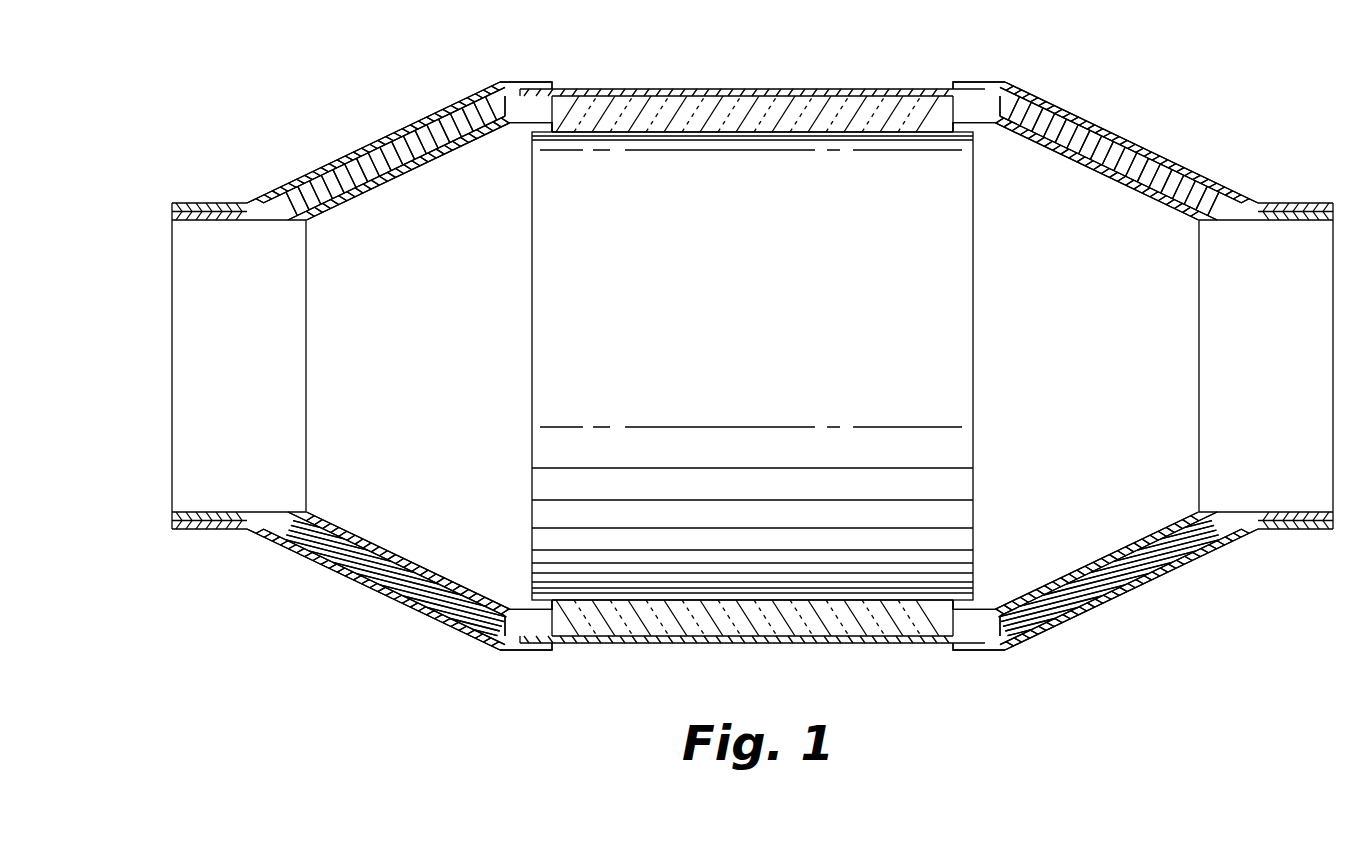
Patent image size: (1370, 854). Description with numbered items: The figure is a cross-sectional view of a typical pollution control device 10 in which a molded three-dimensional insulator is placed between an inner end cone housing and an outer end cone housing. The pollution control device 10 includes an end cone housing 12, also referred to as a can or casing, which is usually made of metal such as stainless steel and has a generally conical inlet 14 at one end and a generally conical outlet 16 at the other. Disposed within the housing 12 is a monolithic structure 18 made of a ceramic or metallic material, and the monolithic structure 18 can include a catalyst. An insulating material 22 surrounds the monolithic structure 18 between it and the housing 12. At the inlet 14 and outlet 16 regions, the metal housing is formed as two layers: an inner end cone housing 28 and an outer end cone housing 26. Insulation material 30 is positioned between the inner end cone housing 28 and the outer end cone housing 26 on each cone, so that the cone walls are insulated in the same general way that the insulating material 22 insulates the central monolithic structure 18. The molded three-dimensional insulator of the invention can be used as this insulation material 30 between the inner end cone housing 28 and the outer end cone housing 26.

The pollution control device 10 is at (752, 368).
The end cone housing 12 is at (627, 90).
The inlet 14 is at (336, 158).
The outlet 16 is at (1190, 178).
The monolithic structure 18 is at (758, 354).
The insulating material 22 is at (763, 112).
The outer end cone housing 26 is at (432, 112).
The inner end cone housing 28 is at (456, 155).
The insulation material 30 is at (393, 145).